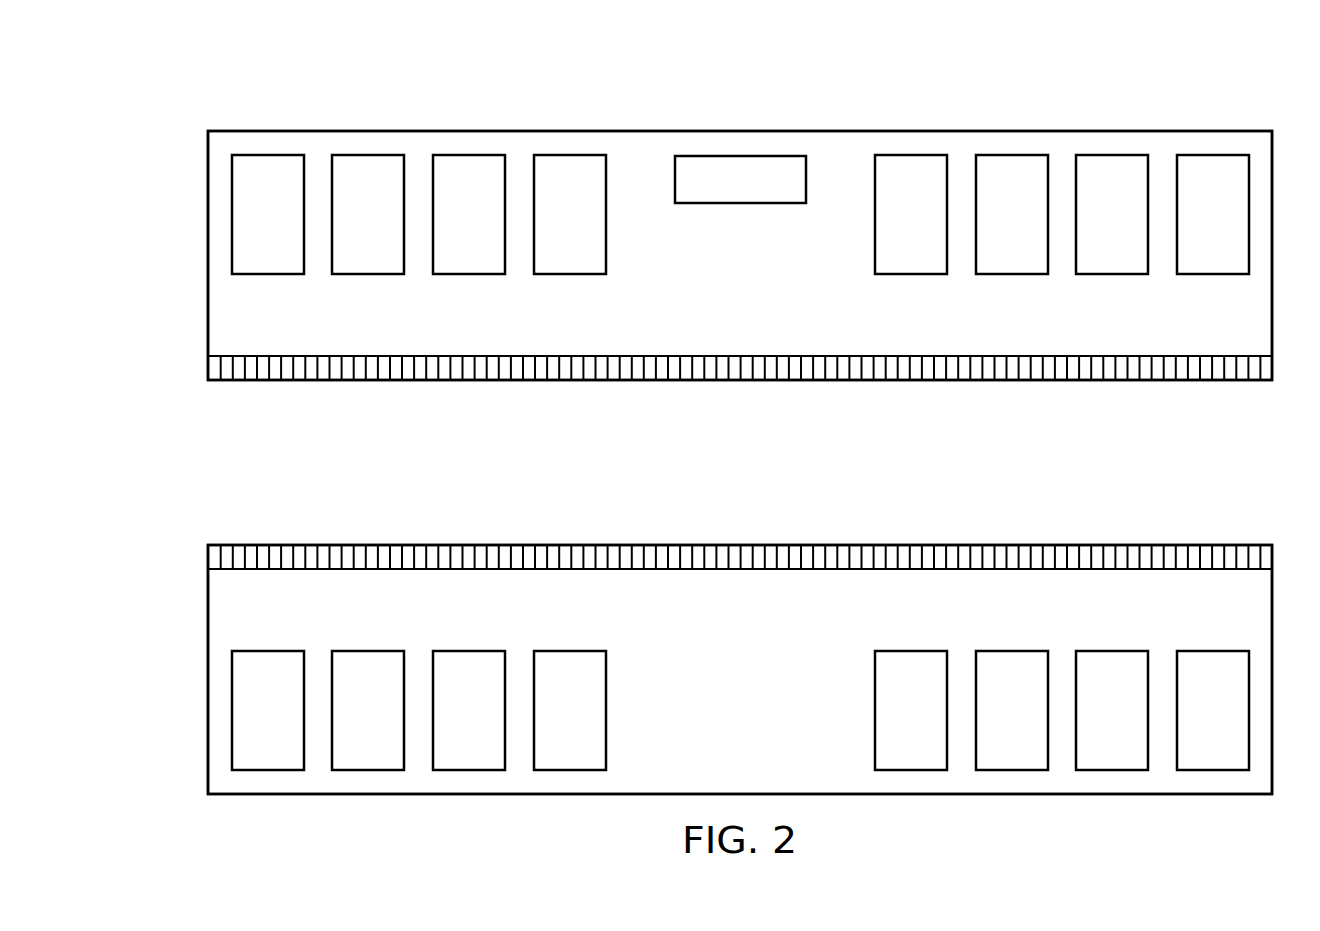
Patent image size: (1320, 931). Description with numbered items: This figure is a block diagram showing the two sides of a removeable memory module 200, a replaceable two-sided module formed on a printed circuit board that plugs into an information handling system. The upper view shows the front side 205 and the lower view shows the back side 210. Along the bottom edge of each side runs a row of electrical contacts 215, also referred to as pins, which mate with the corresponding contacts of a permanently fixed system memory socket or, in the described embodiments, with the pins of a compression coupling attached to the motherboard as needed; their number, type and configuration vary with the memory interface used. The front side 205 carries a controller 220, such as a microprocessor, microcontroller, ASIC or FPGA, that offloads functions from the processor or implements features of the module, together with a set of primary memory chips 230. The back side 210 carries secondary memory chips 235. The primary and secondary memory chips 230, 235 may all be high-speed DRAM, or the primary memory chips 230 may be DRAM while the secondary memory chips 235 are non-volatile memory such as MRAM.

The removeable memory module 200 is at (592, 78).
The front side 205 is at (218, 253).
The back side 210 is at (218, 672).
The electrical contacts 215 is at (250, 370).
The controller 220 is at (739, 193).
The primary memory chips 230 is at (265, 264).
The secondary memory chips 235 is at (267, 662).